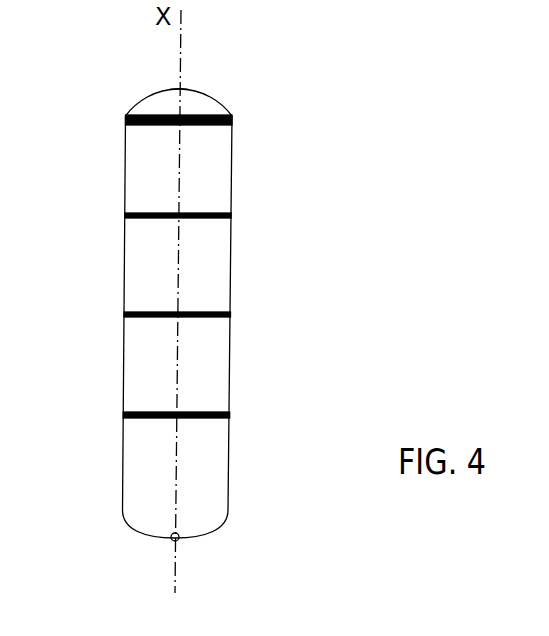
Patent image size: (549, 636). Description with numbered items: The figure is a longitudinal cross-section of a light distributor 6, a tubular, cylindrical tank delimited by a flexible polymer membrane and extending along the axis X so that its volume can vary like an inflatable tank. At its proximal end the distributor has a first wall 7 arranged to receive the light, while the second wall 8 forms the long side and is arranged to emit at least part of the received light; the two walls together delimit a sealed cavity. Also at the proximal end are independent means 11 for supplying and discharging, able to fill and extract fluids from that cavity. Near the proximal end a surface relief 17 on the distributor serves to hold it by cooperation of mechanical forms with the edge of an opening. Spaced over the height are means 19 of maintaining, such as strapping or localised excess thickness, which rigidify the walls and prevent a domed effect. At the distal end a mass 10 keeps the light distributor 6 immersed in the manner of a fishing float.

The light distributor 6 is at (105, 472).
The first wall 7 is at (218, 97).
The second wall 8 is at (232, 173).
The mass 10 is at (180, 540).
The means for supplying and discharging 11 is at (172, 87).
The surface relief 17 is at (240, 118).
The means of maintaining 19 is at (208, 220).